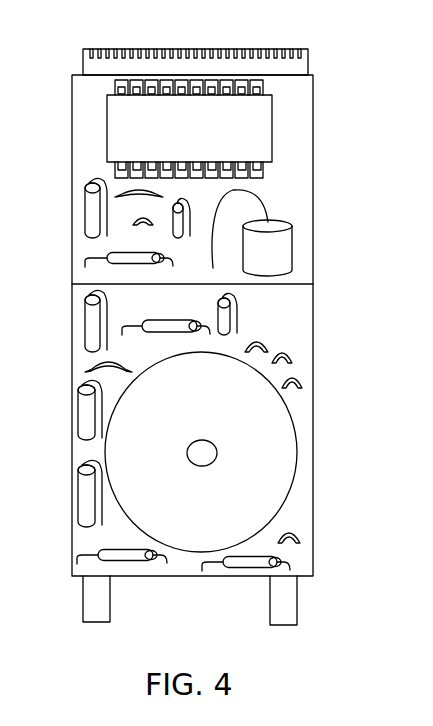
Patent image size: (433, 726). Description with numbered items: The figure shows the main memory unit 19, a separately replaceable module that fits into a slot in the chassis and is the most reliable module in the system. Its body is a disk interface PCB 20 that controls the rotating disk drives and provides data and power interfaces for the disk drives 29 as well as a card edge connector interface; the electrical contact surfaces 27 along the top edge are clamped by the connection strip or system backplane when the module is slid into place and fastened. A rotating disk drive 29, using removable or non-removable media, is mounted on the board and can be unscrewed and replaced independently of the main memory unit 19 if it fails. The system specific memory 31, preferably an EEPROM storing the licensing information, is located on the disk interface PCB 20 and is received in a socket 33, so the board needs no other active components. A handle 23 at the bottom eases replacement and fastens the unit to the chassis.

The main memory unit 19 is at (52, 268).
The disk interface PCB 20 is at (283, 195).
The handle 23 is at (285, 603).
The electrical contact surfaces 27 is at (282, 50).
The rotating disk drive 29 is at (265, 463).
The system specific memory 31 is at (175, 118).
The socket 33 is at (267, 85).